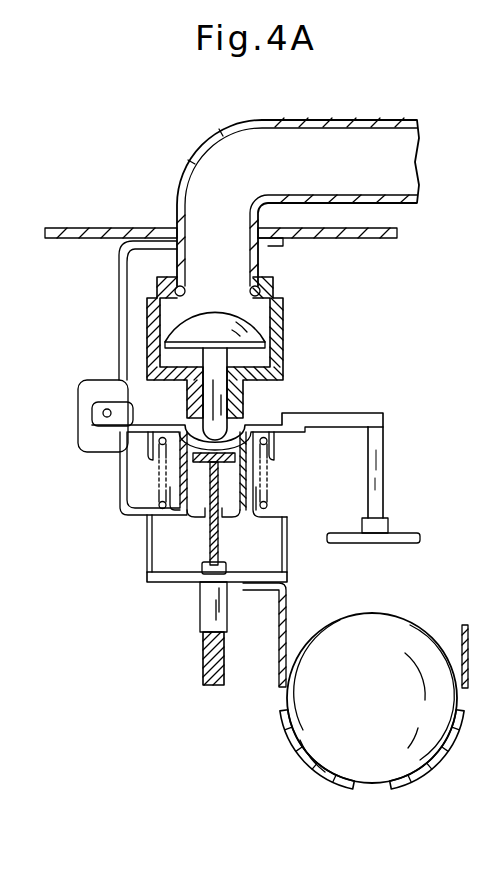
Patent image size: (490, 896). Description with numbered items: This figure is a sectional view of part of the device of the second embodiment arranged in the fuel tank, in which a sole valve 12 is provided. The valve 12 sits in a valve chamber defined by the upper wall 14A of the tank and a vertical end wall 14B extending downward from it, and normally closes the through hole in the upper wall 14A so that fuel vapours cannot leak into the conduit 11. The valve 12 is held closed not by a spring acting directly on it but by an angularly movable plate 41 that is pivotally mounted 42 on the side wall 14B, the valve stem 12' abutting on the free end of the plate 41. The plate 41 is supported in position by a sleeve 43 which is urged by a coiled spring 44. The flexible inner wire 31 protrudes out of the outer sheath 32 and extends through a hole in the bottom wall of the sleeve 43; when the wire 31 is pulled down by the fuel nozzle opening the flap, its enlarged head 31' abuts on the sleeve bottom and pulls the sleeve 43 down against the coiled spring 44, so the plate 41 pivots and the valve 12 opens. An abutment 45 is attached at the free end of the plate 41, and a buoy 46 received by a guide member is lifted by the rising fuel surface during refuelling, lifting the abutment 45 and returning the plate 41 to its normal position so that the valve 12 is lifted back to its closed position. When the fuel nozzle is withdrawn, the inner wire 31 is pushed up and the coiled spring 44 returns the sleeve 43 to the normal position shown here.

The conduit 11 is at (363, 131).
The upper wall 14A is at (84, 232).
The end wall 14B is at (127, 314).
The valve 12 is at (237, 347).
The valve stem 12' is at (265, 394).
The pivot mounting 42 is at (92, 418).
The angularly movable plate 41 is at (140, 434).
The sleeve 43 is at (192, 458).
The coiled spring 44 is at (160, 480).
The enlarged head 31' is at (172, 534).
The inner wire 31 is at (196, 601).
The outer sheath 32 is at (205, 662).
The abutment 45 is at (373, 475).
The buoy 46 is at (418, 658).